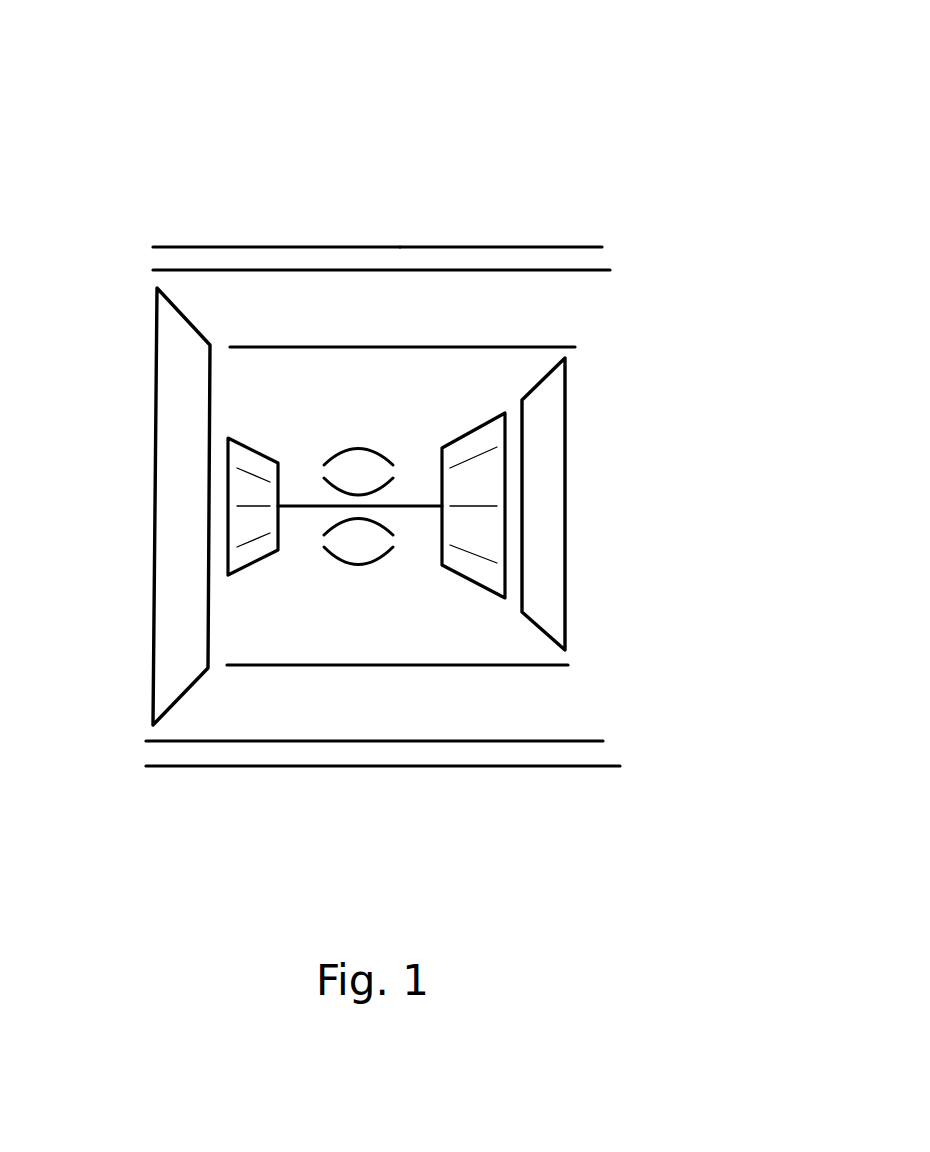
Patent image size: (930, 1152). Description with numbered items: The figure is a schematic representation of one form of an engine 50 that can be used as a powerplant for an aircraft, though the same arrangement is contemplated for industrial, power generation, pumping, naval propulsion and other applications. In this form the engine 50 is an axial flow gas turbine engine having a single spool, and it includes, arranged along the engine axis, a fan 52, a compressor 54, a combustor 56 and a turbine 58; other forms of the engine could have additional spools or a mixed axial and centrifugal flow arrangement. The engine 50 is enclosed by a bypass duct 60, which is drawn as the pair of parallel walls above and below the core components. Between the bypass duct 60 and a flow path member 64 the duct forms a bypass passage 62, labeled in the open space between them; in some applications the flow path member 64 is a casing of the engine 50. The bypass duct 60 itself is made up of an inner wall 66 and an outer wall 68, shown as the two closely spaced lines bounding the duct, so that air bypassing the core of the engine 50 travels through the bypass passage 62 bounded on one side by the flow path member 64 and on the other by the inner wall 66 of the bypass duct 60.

The engine 50 is at (502, 118).
The fan 52 is at (156, 355).
The compressor 54 is at (242, 446).
The combustor 56 is at (378, 451).
The turbine 58 is at (510, 633).
The bypass duct 60 is at (270, 246).
The bypass passage 62 is at (390, 323).
The flow path member 64 is at (575, 347).
The inner wall 66 is at (610, 270).
The outer wall 68 is at (507, 246).